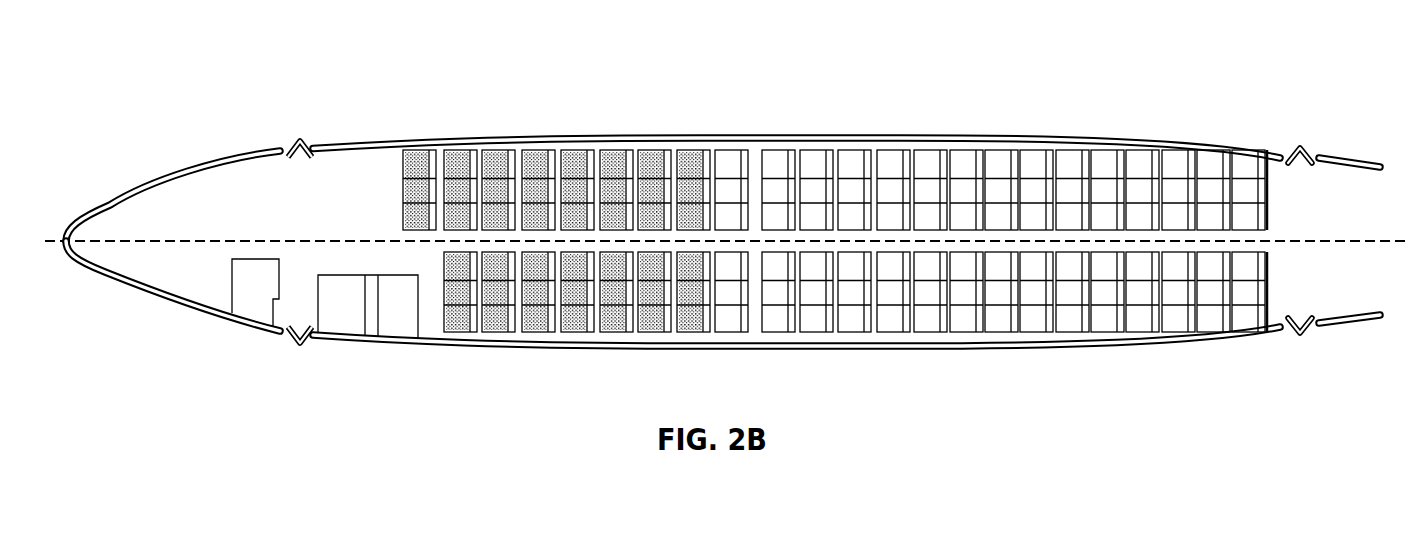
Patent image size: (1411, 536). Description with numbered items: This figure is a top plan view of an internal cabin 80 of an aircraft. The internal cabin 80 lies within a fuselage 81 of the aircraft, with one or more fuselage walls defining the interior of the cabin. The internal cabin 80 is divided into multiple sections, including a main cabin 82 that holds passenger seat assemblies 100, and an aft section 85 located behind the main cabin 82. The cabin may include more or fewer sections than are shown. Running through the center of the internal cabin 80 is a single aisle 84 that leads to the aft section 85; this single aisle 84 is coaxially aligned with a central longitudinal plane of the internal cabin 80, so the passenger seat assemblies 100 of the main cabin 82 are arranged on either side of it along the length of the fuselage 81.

The internal cabin 80 is at (725, 195).
The fuselage 81 is at (523, 142).
The main cabin 82 is at (460, 170).
The single aisle 84 is at (853, 236).
The aft section 85 is at (1283, 173).
The passenger seat assemblies 100 is at (732, 170).